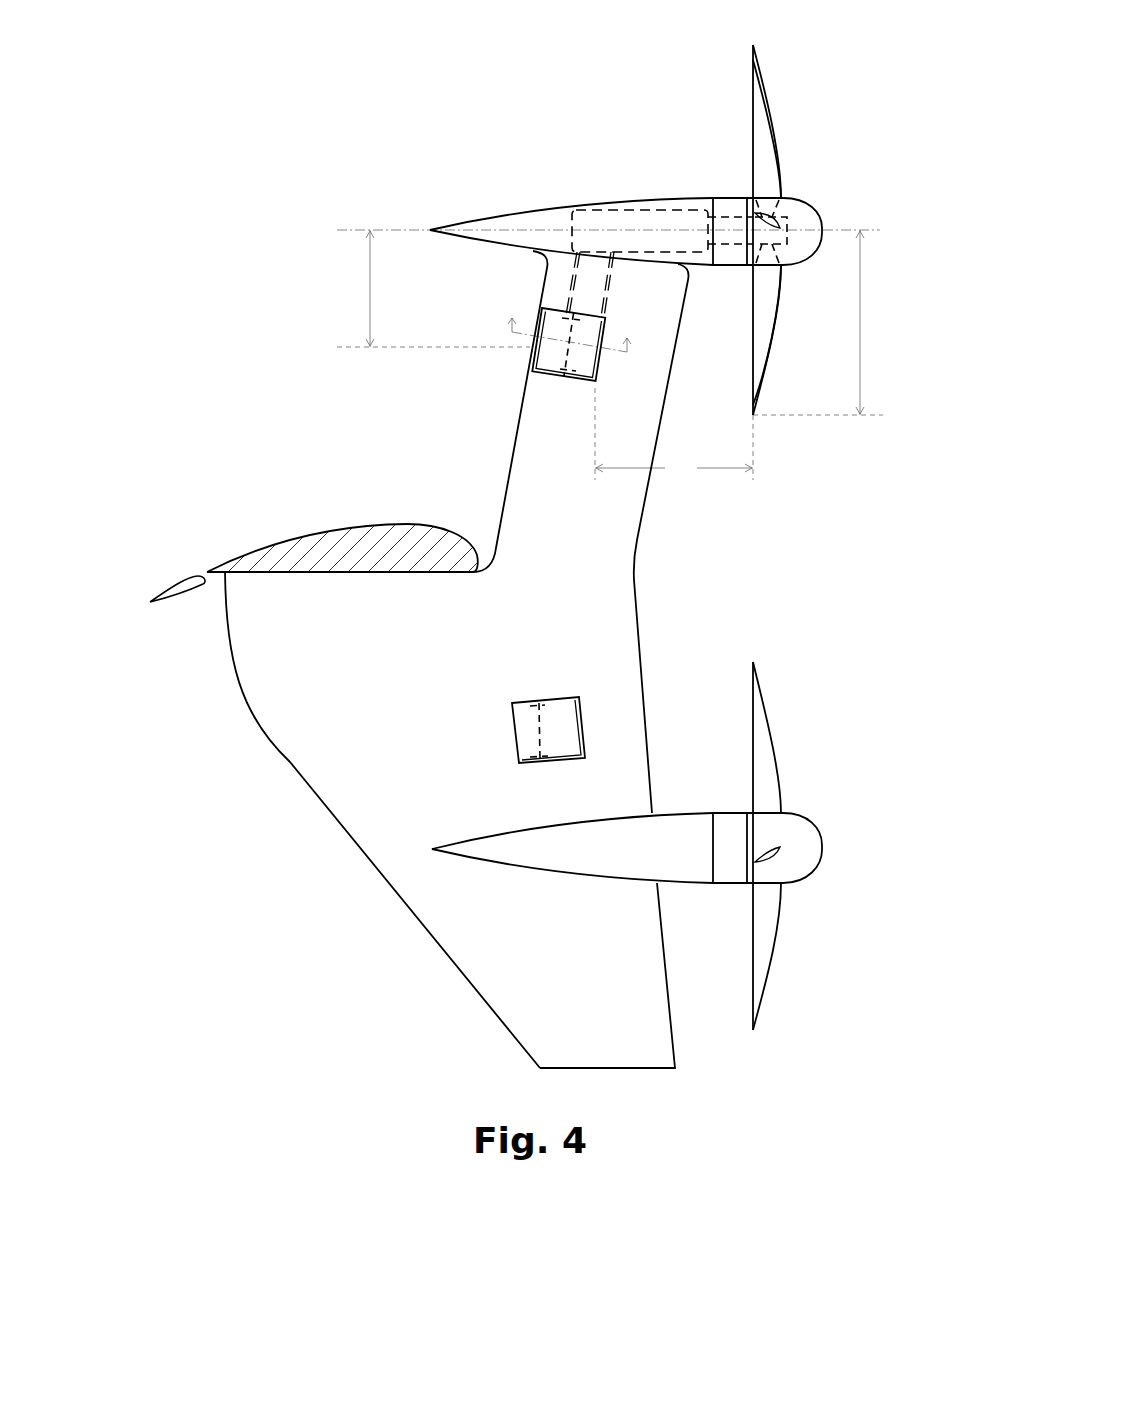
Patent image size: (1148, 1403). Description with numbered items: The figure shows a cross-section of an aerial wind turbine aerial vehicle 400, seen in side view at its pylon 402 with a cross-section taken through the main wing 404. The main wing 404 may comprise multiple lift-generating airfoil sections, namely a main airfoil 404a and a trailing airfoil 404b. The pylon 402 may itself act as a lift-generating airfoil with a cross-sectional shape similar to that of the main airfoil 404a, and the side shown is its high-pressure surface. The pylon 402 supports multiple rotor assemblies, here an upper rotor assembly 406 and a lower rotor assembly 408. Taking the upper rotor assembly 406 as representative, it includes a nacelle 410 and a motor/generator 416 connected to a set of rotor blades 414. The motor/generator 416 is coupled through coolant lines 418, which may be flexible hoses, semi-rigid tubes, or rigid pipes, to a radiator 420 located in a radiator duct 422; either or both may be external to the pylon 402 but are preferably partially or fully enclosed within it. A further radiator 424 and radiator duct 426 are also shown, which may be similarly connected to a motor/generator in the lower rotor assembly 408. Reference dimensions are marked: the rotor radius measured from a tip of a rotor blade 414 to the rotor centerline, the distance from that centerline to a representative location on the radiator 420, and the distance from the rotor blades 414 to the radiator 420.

The aerial vehicle 400 is at (298, 181).
The pylon 402 is at (602, 530).
The main wing 404 is at (317, 515).
The main airfoil 404a is at (377, 525).
The trailing airfoil 404b is at (187, 572).
The upper rotor assembly 406 is at (815, 152).
The lower rotor assembly 408 is at (803, 778).
The nacelle 410 is at (545, 222).
The rotor blades 414 is at (763, 153).
The motor/generator 416 is at (643, 208).
The coolant lines 418 is at (570, 282).
The radiator 420 is at (583, 363).
The radiator duct 422 is at (547, 370).
The radiator 424 is at (559, 712).
The radiator duct 426 is at (512, 730).